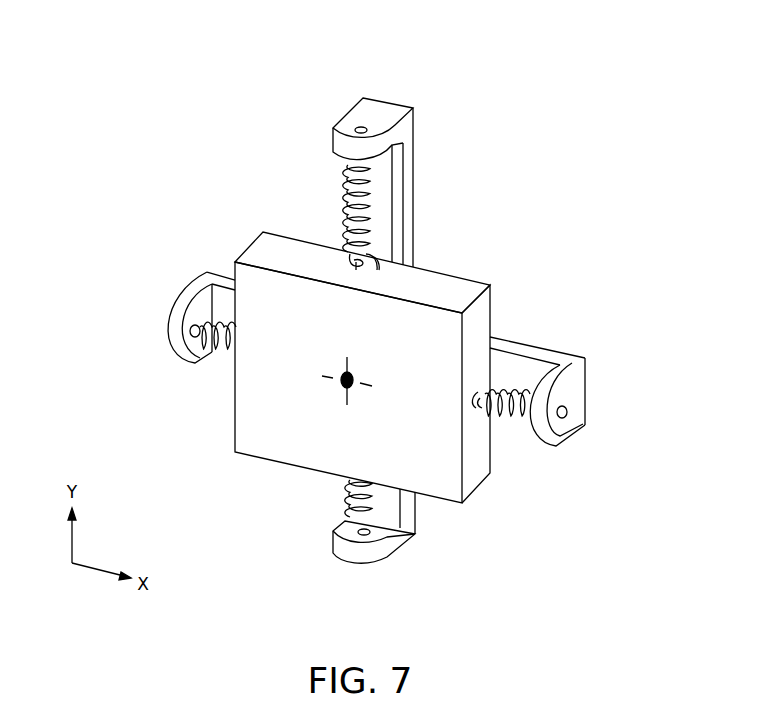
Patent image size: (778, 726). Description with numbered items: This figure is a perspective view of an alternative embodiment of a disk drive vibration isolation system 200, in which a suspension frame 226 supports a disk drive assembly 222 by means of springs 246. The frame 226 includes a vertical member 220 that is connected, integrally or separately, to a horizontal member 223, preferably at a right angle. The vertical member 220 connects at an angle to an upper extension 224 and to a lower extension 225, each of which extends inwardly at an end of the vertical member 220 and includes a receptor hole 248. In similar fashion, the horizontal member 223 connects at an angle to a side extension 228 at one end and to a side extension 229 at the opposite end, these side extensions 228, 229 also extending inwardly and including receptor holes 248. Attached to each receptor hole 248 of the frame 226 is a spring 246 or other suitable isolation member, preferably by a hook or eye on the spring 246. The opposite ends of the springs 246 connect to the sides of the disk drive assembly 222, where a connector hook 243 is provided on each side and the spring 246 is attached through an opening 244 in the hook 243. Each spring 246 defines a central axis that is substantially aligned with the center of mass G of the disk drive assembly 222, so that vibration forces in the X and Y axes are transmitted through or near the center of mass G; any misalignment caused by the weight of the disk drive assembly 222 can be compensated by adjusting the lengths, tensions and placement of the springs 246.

The disk drive vibration isolation system 200 is at (588, 99).
The disk drive assembly 222 is at (244, 464).
The suspension frame 226 is at (413, 99).
The vertical member 220 is at (415, 174).
The upper extension 224 is at (365, 108).
The side extension 228 is at (198, 307).
The horizontal member 223 is at (557, 356).
The side extension 229 is at (586, 392).
The lower extension 225 is at (388, 531).
The spring 246 is at (373, 213).
The connector hook 243 is at (398, 259).
The opening 244 is at (357, 272).
The receptor hole 248 is at (352, 130).
The center of mass G is at (355, 390).